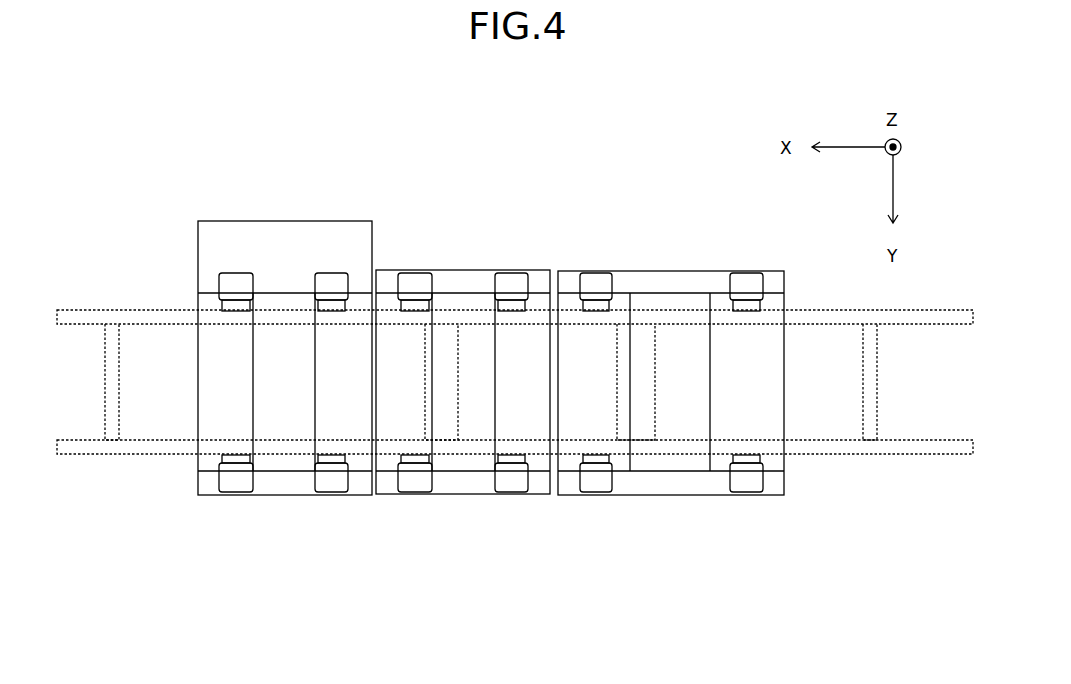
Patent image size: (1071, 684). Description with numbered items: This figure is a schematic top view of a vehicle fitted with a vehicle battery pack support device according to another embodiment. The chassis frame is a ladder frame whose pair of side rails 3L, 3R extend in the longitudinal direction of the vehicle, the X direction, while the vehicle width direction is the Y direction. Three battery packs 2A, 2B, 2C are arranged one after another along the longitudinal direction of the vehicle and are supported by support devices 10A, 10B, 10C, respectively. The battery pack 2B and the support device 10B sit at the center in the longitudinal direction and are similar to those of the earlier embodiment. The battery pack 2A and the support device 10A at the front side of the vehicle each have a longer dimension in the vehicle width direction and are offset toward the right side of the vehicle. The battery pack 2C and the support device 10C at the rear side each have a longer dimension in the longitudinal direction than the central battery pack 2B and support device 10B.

The support device 10A is at (285, 355).
The support device 10B is at (463, 378).
The support device 10C is at (671, 395).
The battery pack 2A is at (290, 430).
The battery pack 2B is at (480, 430).
The battery pack 2C is at (662, 463).
The side rail 3R is at (786, 297).
The side rail 3L is at (786, 454).